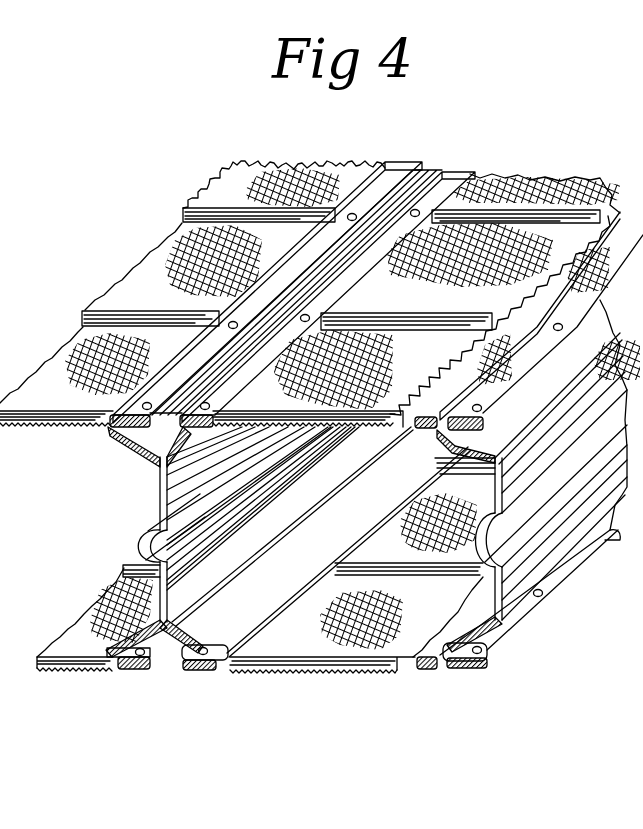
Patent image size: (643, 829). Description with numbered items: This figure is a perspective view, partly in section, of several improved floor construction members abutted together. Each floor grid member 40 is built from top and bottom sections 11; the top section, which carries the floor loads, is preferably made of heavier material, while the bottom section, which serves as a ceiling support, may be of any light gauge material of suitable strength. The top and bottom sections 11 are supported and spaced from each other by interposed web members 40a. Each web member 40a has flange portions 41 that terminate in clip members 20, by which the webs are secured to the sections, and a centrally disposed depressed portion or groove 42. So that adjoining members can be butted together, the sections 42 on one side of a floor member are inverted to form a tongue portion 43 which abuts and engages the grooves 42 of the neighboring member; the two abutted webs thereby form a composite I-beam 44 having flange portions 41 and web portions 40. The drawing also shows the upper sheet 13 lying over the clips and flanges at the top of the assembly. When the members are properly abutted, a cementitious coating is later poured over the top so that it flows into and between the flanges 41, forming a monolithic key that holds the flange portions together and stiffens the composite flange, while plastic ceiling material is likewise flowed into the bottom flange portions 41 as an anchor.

The top and bottom sections 11 is at (42, 428).
The upper roof sheet 13 is at (212, 217).
The clip members 20 is at (408, 173).
The floor grid member 40 is at (58, 535).
The web members 40a is at (550, 615).
The flange portions 41 is at (125, 445).
The depressed portions or grooves 42 is at (142, 548).
The tongue portion 43 is at (207, 520).
The composite I-beam 44 is at (197, 552).